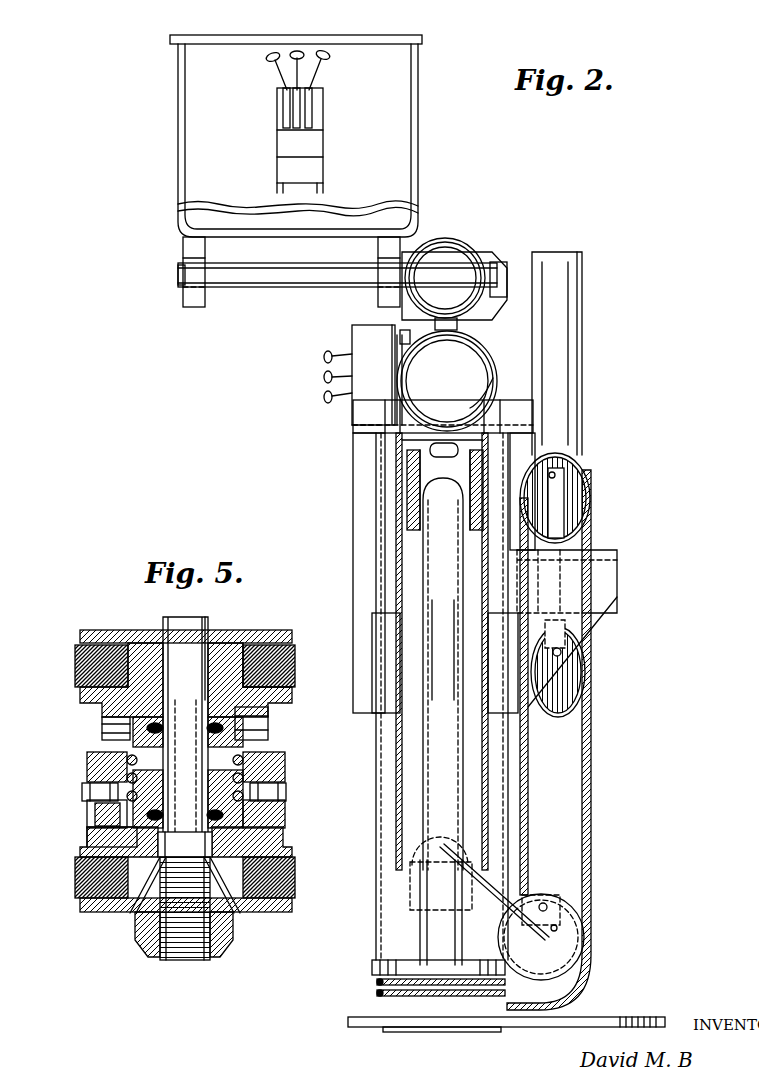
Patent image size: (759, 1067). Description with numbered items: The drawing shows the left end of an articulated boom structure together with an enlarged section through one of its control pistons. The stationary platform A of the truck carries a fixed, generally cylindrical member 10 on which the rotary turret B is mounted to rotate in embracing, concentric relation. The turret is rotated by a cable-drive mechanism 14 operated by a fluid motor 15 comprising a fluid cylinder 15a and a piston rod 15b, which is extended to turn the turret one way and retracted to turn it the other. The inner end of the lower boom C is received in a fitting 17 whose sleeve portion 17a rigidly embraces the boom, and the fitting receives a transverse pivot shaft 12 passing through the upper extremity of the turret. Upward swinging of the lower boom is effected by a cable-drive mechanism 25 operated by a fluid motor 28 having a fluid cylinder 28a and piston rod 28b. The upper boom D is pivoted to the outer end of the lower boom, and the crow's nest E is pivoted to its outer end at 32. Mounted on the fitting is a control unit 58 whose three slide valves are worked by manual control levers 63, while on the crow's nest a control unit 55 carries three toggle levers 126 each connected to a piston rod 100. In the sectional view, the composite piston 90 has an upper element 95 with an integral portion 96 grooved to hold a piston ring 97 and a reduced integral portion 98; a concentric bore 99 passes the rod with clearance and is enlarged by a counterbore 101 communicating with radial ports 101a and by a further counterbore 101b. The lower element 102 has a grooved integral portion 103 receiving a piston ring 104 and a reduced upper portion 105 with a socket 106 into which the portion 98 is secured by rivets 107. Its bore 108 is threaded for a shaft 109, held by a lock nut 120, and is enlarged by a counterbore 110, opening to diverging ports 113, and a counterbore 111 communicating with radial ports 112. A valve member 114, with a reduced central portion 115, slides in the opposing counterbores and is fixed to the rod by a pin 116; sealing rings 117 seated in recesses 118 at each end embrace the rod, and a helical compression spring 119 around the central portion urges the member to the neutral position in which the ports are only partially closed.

In FIG. 2, the crow's nest E is at (393, 182).
In FIG. 2, the pivot 32 is at (292, 273).
In FIG. 2, the control unit 55 is at (313, 143).
In FIG. 2, the toggle levers 126 is at (318, 63).
In FIG. 2, the upper boom D is at (473, 248).
In FIG. 2, the lower boom C is at (487, 353).
In FIG. 2, the pivot shaft 12 is at (493, 378).
In FIG. 2, the control unit 58 is at (344, 341).
In FIG. 2, the control levers 63 is at (323, 377).
In FIG. 2, the fitting 17 is at (391, 386).
In FIG. 2, the sleeve portion 17a is at (407, 348).
In FIG. 2, the cable-drive mechanism 25 is at (389, 556).
In FIG. 2, the fluid motor 28 is at (429, 590).
In FIG. 2, the fluid cylinder 28a is at (437, 598).
In FIG. 2, the piston rod 28b is at (456, 900).
In FIG. 2, the rotary turret B is at (497, 814).
In FIG. 2, the fluid motor 15 is at (581, 423).
In FIG. 2, the fluid cylinder 15a is at (580, 387).
In FIG. 2, the piston rod 15b is at (580, 657).
In FIG. 2, the cable-drive mechanism 14 is at (601, 524).
In FIG. 2, the stationary platform A is at (626, 1017).
In FIG. 2, the cylindrical member 10 is at (398, 1018).
In FIG. 5, the piston 90 is at (230, 643).
In FIG. 5, the upper element 95 is at (137, 622).
In FIG. 5, the integral portion 96 is at (88, 693).
In FIG. 5, the piston ring 97 is at (90, 667).
In FIG. 5, the integral portion 98 is at (262, 785).
In FIG. 5, the bore 99 is at (212, 637).
In FIG. 5, the piston rod 100 is at (180, 637).
In FIG. 5, the counterbore 101 is at (255, 713).
In FIG. 5, the radial ports 101a is at (107, 722).
In FIG. 5, the counterbore 101b is at (120, 753).
In FIG. 5, the lower element 102 is at (74, 851).
In FIG. 5, the integral portion 103 is at (87, 907).
In FIG. 5, the piston ring 104 is at (92, 877).
In FIG. 5, the upper portion 105 is at (90, 790).
In FIG. 5, the socket 106 is at (102, 790).
In FIG. 5, the rivets 107 is at (94, 773).
In FIG. 5, the bore 108 is at (227, 917).
In FIG. 5, the shaft 109 is at (183, 940).
In FIG. 5, the counterbore 110 is at (200, 840).
In FIG. 5, the counterbore 111 is at (240, 825).
In FIG. 5, the radial ports 112 is at (97, 822).
In FIG. 5, the ports 113 is at (140, 895).
In FIG. 5, the valve member 114 is at (245, 735).
In FIG. 5, the central portion 115 is at (260, 753).
In FIG. 5, the pin 116 is at (215, 770).
In FIG. 5, the sealing rings 117 is at (168, 725).
In FIG. 5, the recess 118 is at (225, 735).
In FIG. 5, the helical compression spring 119 is at (128, 760).
In FIG. 5, the lock nut 120 is at (217, 940).